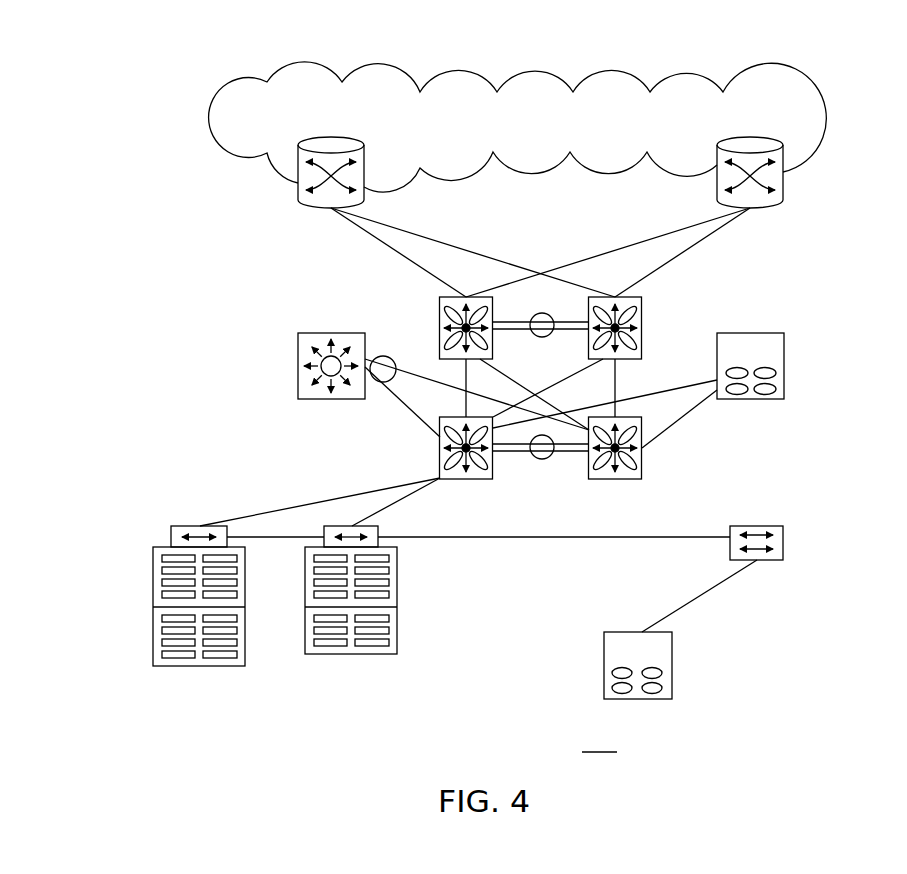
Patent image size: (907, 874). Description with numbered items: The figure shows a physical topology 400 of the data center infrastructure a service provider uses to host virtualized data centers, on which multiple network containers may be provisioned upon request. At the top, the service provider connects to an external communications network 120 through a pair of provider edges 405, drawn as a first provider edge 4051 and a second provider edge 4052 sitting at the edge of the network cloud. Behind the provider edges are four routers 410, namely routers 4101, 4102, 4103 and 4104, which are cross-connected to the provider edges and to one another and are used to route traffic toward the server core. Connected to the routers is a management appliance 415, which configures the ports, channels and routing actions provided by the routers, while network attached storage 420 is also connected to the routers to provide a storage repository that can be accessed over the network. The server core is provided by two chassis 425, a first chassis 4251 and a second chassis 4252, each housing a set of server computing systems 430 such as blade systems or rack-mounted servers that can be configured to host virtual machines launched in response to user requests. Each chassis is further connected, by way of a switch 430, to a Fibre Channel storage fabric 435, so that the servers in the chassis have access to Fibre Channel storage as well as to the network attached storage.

The topology 400 is at (148, 76).
The communications network 120 is at (790, 62).
The provider edges 405 is at (547, 184).
The provider edge 4051 is at (298, 188).
The provider edge 4052 is at (783, 188).
The routers 410 is at (536, 399).
The router 4101 is at (440, 307).
The router 4102 is at (642, 313).
The router 4103 is at (452, 478).
The router 4104 is at (603, 478).
The management appliance 415 is at (298, 345).
The network attached storage 420 is at (784, 353).
The chassis 425 is at (281, 629).
The chassis 4251 is at (178, 667).
The chassis 4252 is at (335, 655).
The server computing systems 430 is at (168, 655).
The Fibre Channel storage fabric 435 is at (672, 655).